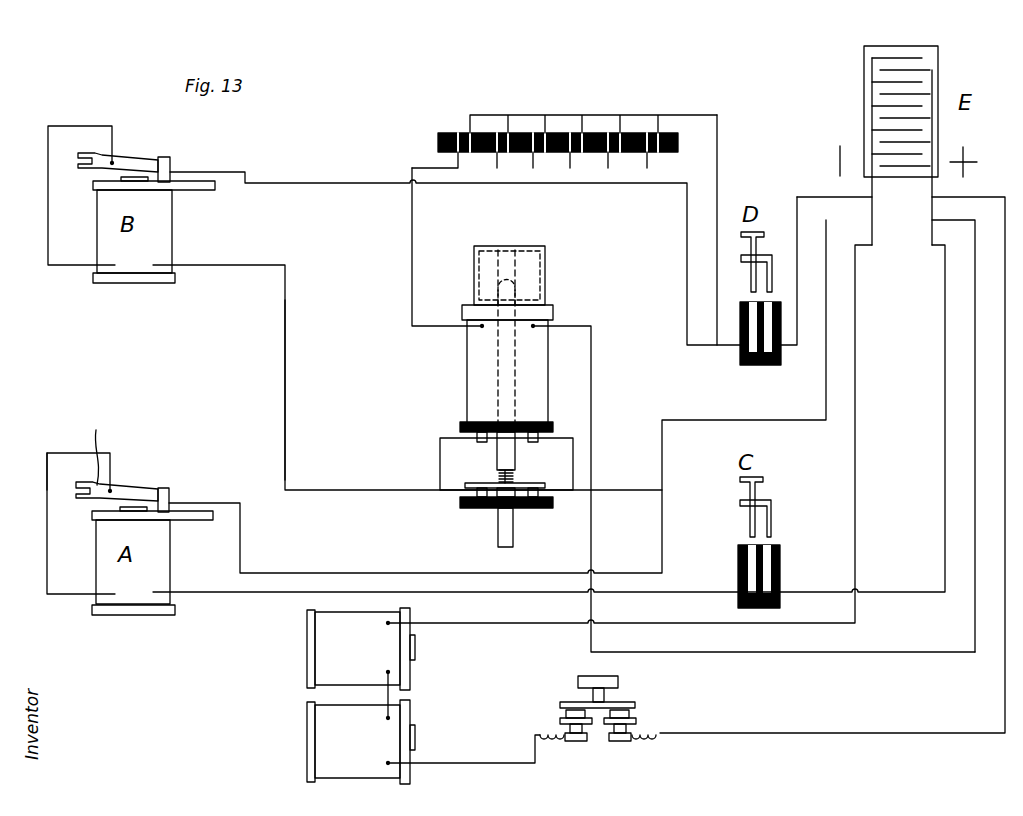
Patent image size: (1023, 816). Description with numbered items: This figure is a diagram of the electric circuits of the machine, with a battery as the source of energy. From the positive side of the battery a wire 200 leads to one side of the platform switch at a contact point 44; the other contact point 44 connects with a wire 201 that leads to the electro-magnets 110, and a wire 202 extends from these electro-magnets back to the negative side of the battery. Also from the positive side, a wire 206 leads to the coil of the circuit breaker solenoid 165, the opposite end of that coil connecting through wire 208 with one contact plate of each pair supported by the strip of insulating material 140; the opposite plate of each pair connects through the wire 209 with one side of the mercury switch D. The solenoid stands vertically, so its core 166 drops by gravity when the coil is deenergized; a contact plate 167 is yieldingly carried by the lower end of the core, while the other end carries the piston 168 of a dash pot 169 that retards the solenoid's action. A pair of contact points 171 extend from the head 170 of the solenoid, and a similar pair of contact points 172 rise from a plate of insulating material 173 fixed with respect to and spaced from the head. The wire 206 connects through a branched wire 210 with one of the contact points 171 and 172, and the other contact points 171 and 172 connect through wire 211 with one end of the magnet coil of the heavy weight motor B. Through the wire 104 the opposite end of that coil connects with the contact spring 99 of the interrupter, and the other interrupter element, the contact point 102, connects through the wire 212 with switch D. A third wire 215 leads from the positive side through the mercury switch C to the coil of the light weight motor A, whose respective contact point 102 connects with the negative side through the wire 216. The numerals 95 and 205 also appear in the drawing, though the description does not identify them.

The contact point 44 is at (636, 716).
The armature pivot lead 95 is at (82, 454).
The contact spring 99 is at (140, 160).
The contact point 102 is at (170, 172).
The wire 104 is at (48, 203).
The electro-magnets 110 is at (361, 696).
The strip of insulating material 140 is at (440, 133).
The solenoid 165 is at (478, 356).
The core 166 is at (497, 450).
The contact plate 167 is at (520, 483).
The piston 168 is at (530, 285).
The dash pot 169 is at (532, 248).
The head of the solenoid 170 is at (460, 428).
The contact points 171 is at (483, 422).
The contact points 172 is at (478, 490).
The plate of insulating material 173 is at (460, 503).
The wire 200 is at (1005, 362).
The wire 201 is at (497, 764).
The wire 202 is at (856, 394).
The wire 205 is at (822, 188).
The wire 206 is at (975, 322).
The wire 208 is at (413, 210).
The wire 209 is at (717, 128).
The branched wire 210 is at (573, 438).
The wire 211 is at (286, 405).
The wire 212 is at (365, 183).
The wire 215 is at (945, 268).
The wire 216 is at (826, 322).